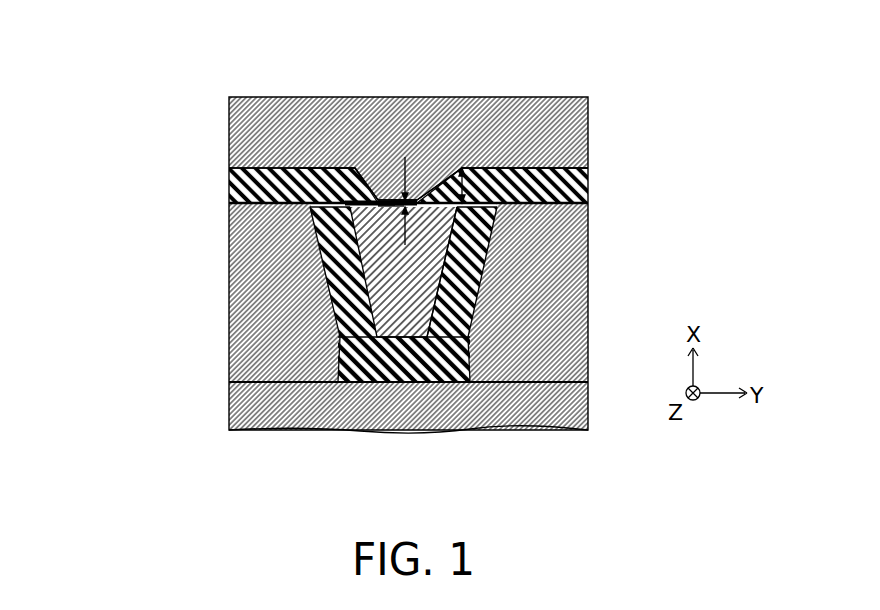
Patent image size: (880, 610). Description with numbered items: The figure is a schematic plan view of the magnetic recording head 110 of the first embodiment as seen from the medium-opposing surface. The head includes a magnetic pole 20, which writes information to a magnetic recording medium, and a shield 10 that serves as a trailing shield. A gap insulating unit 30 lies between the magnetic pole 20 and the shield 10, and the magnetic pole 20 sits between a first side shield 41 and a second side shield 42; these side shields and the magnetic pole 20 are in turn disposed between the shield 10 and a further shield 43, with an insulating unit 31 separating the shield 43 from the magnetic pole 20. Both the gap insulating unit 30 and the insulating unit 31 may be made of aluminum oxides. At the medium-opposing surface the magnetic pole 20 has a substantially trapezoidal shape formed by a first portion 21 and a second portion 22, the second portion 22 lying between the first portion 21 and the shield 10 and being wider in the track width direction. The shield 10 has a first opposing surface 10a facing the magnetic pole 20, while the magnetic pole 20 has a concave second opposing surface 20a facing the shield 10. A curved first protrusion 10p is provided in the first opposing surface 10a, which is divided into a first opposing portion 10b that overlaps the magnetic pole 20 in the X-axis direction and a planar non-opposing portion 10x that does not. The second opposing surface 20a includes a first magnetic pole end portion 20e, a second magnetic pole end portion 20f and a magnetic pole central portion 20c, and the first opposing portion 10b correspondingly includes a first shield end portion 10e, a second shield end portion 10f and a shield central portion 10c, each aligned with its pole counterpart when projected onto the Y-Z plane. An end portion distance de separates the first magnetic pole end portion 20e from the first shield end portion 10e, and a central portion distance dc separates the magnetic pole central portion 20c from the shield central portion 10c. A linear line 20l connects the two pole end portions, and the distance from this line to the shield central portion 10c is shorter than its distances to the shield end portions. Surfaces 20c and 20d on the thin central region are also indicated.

The magnetic recording head 110 is at (716, 110).
The shield 10 is at (250, 134).
The first opposing surface 10a is at (356, 170).
The first opposing portion 10b is at (451, 180).
The shield central portion 10c is at (420, 195).
The first shield end portion 10e is at (466, 170).
The second shield end portion 10f is at (372, 178).
The first protrusion 10p is at (432, 178).
The non-opposing portion 10x is at (539, 167).
The magnetic pole 20 is at (377, 263).
The second opposing surface 20a is at (343, 170).
The magnetic pole central portion 20c is at (404, 208).
The bottom surface of thin portion of liner 20d is at (391, 203).
The first magnetic pole end portion 20e is at (470, 208).
The second magnetic pole end portion 20f is at (340, 205).
The linear line 20l is at (385, 207).
The first portion 21 is at (429, 320).
The second portion 22 is at (472, 220).
The gap insulating unit 30 is at (300, 185).
The insulating unit 31 is at (387, 368).
The first side shield 41 is at (265, 286).
The second side shield 42 is at (537, 286).
The shield 43 is at (296, 402).
The central portion distance dc is at (400, 200).
The end portion distance de is at (465, 186).